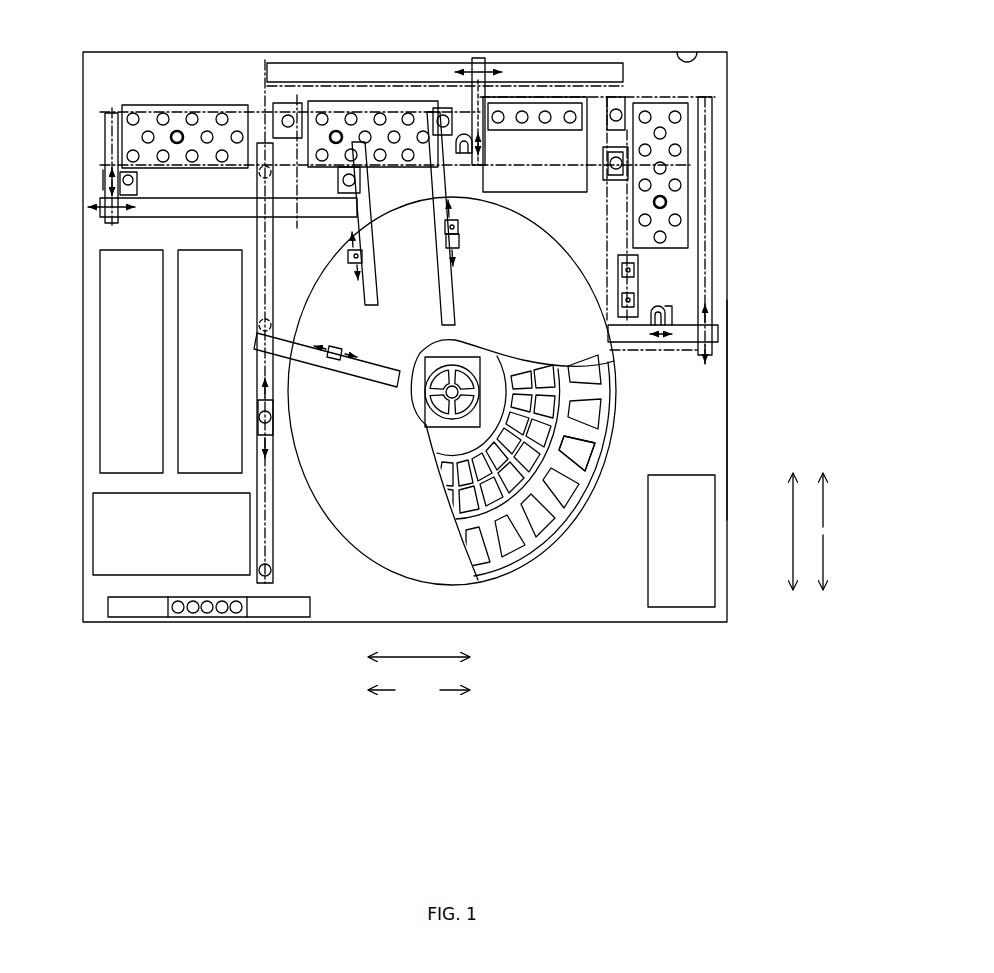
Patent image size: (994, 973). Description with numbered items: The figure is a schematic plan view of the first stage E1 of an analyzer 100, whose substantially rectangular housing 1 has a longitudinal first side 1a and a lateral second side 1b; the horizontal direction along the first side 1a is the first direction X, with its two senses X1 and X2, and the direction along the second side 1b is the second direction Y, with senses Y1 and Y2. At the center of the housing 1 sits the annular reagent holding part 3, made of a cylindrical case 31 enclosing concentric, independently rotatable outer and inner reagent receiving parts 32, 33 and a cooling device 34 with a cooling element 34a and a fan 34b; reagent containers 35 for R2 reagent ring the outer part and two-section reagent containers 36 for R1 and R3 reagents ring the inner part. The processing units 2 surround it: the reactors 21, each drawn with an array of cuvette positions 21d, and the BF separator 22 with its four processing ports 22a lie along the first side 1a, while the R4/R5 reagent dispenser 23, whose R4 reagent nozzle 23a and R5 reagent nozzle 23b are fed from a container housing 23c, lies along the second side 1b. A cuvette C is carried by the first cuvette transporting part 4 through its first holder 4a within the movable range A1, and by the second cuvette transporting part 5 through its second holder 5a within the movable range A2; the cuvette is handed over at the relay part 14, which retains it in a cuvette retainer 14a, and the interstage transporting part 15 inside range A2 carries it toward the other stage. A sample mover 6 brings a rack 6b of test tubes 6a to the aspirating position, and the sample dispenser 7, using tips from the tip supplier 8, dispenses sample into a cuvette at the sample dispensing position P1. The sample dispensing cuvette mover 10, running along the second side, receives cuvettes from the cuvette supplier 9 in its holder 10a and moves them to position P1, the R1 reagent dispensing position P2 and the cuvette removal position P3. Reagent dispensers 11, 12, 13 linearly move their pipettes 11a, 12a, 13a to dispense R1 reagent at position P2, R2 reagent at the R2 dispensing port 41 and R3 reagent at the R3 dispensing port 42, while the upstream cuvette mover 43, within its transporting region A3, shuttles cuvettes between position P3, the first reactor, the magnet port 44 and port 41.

The analyzer 100 is at (746, 84).
The housing 1 is at (730, 70).
The first side 1a is at (688, 56).
The second side 1b is at (728, 418).
The processing units 2 is at (121, 100).
The reactors 21 is at (160, 105).
The component holding hole 21d is at (222, 113).
The BF separator 22 is at (531, 97).
The processing ports 22a is at (499, 122).
The R4/R5 reagent dispenser 23 is at (642, 274).
The R4 reagent nozzle 23a is at (621, 270).
The R5 reagent nozzle 23b is at (621, 300).
The container housing 23c is at (681, 541).
The reagent holding part 3 is at (550, 556).
The case 31 is at (456, 580).
The outer reagent receiving part 32 is at (474, 568).
The inner reagent receiving part 33 is at (474, 517).
The cooling device 34 is at (411, 492).
The cooling element 34a is at (441, 421).
The fan 34b is at (440, 404).
The reagent containers 35 is at (564, 494).
The reagent containers 36 is at (530, 461).
The first cuvette transporting part 4 is at (477, 95).
The first holder 4a is at (457, 160).
The R2 dispensing port 41 is at (348, 185).
The R3 dispensing port 42 is at (442, 110).
The upstream cuvette mover 43 is at (103, 226).
The magnet port 44 is at (286, 103).
The second cuvette transporting part 5 is at (720, 330).
The second holder 5a is at (662, 300).
The sample mover 6 is at (108, 605).
The test tubes 6a is at (180, 613).
The rack 6b is at (249, 613).
The sample dispenser 7 is at (171, 534).
The tip supplier 8 is at (131, 361).
The cuvette supplier 9 is at (210, 361).
The sample dispensing cuvette mover 10 is at (278, 504).
The sample dispensing cuvette holder 10a is at (274, 420).
The reagent dispenser 11 is at (342, 377).
The pipette 11a is at (345, 351).
The reagent dispenser 12 is at (374, 246).
The pipette 12a is at (353, 265).
The reagent dispenser 13 is at (436, 274).
The pipette 13a is at (456, 248).
The relay part 14 is at (614, 97).
The cuvette retainer 14a is at (618, 112).
The interstage transporting part 15 is at (612, 170).
The movable range A1 is at (297, 171).
The movable range A2 is at (662, 360).
The transporting region A3 is at (100, 180).
The cuvette C is at (139, 180).
The sample dispensing position P1 is at (272, 571).
The R1 reagent dispensing position P2 is at (259, 325).
The cuvette removal position P3 is at (260, 176).
The first stage E1 is at (624, 585).
The first direction X is at (419, 645).
The X1 direction X1 is at (390, 680).
The X2 direction X2 is at (449, 680).
The second direction Y is at (784, 531).
The Y1 direction Y1 is at (812, 500).
The Y2 direction Y2 is at (812, 562).